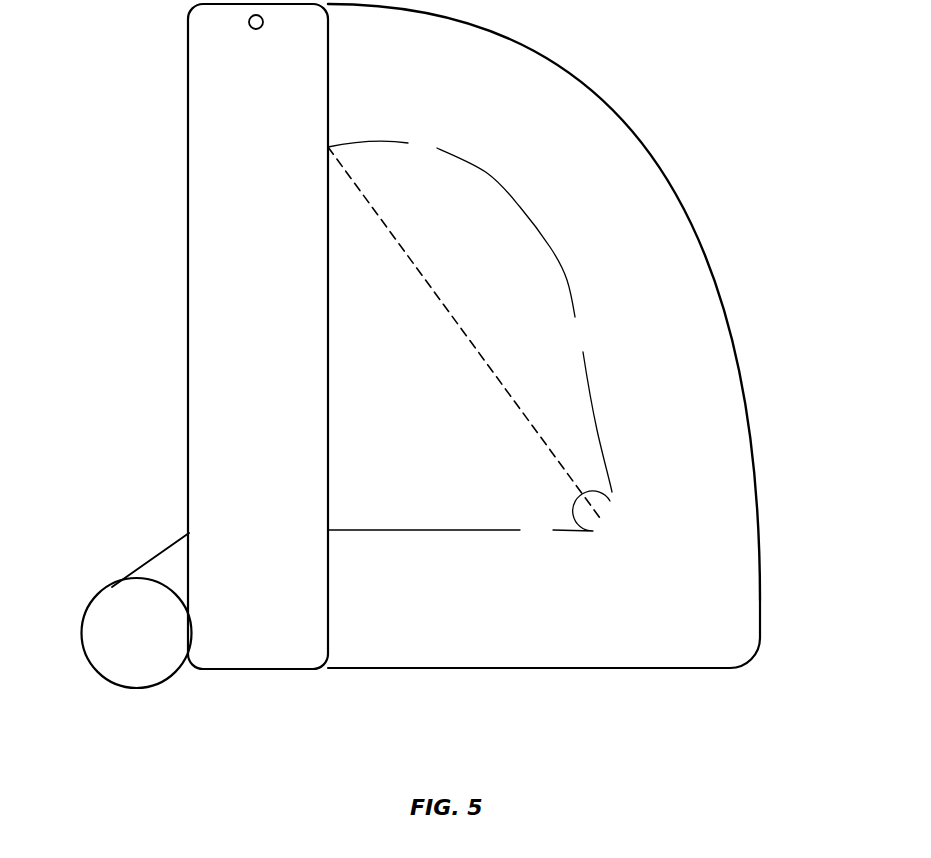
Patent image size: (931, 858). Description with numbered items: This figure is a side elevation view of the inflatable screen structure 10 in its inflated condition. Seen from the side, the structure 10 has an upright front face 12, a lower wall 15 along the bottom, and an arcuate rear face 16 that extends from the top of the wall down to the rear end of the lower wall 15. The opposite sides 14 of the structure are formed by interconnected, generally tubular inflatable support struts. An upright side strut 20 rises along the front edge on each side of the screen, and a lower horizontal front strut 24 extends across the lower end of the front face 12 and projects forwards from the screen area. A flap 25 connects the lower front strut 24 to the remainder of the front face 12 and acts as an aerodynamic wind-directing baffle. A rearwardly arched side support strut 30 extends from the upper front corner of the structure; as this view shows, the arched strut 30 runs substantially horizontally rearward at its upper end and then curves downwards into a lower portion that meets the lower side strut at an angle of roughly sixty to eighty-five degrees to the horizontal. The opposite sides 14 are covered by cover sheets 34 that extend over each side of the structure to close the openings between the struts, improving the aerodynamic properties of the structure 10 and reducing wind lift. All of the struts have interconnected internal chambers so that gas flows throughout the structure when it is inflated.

The inflatable screen structure 10 is at (422, 359).
The front face 12 is at (210, 336).
The opposite sides 14 is at (508, 383).
The lower wall 15 is at (486, 679).
The arcuate rear face 16 is at (686, 195).
The upright side struts 20 is at (213, 320).
The lower horizontal front strut 24 is at (107, 637).
The flap 25 is at (148, 557).
The rearwardly arched side support struts 30 is at (690, 247).
The cover sheets 34 is at (700, 325).